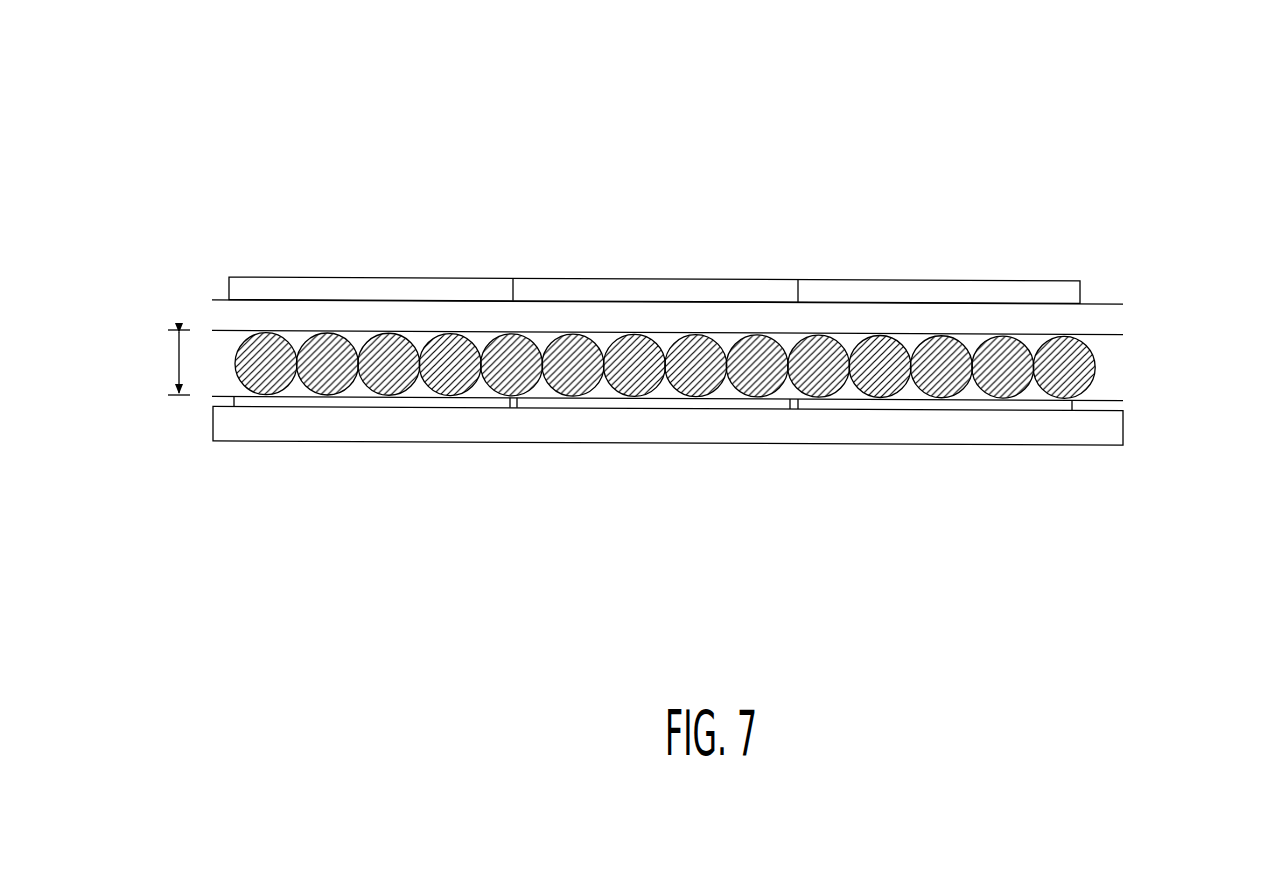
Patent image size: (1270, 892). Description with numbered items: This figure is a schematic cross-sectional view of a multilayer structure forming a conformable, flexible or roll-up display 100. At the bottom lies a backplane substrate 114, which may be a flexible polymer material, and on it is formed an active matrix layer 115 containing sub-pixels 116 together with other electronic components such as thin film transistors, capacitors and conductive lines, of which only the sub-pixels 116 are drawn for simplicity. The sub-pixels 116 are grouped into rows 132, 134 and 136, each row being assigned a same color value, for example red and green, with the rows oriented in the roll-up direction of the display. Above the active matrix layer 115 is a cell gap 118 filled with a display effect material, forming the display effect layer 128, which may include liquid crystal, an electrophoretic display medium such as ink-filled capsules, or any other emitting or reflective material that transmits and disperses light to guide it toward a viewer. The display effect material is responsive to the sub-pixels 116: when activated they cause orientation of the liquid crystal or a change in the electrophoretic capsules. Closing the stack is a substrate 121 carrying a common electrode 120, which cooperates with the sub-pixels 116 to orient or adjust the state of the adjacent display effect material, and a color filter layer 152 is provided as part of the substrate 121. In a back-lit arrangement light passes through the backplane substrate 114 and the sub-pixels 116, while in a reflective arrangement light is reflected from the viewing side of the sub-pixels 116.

The display 100 is at (268, 148).
The color filter layer 152 is at (227, 290).
The substrate 121 is at (1108, 319).
The common electrode 120 is at (1113, 337).
The display effect layer 128 is at (1120, 370).
The cell gap 118 is at (165, 362).
The active matrix layer 115 is at (1123, 405).
The sub-pixels 116 is at (488, 403).
The backplane substrate 114 is at (1123, 430).
The row 132 is at (363, 516).
The row 134 is at (655, 531).
The row 136 is at (952, 530).